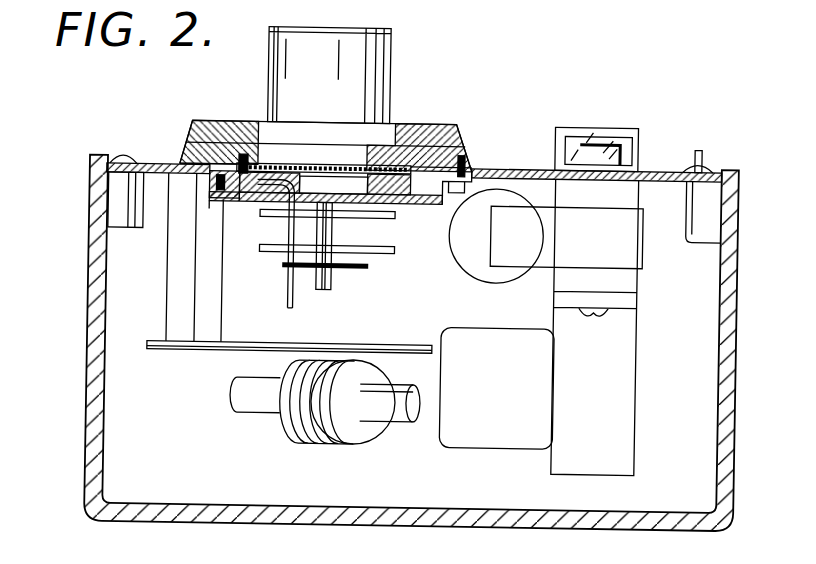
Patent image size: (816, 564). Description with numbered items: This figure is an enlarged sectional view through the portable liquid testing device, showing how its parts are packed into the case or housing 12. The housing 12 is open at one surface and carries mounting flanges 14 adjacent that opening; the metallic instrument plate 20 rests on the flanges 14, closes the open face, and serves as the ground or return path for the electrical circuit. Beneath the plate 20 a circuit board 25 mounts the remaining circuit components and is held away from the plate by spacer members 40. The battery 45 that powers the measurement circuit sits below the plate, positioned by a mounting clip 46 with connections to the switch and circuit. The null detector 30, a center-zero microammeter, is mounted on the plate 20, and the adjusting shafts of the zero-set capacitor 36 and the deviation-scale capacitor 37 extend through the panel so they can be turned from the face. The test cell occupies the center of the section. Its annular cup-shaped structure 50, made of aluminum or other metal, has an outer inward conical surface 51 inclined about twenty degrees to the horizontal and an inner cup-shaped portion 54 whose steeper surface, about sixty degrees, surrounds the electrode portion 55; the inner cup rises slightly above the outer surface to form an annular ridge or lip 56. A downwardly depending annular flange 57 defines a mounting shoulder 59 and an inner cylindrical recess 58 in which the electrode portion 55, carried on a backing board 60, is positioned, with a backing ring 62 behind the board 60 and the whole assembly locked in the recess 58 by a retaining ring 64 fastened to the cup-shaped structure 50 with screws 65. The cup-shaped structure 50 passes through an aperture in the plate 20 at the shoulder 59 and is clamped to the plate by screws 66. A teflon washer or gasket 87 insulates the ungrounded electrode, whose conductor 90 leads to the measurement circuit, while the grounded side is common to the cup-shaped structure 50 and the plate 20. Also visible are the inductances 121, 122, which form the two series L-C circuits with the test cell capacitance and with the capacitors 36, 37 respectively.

The case or housing 12 is at (92, 360).
The mounting flanges 14 is at (116, 205).
The instrument plate 20 is at (650, 176).
The circuit board 25 is at (236, 355).
The null detector 30 is at (576, 132).
The zero-set capacitor 36 is at (273, 287).
The deviation-scale capacitor 37 is at (385, 260).
The spacer members 40 is at (182, 285).
The battery 45 is at (498, 282).
The mounting clip 46 is at (630, 241).
The cup-shaped structure 50 is at (455, 140).
The inward conical surface 51 is at (432, 132).
The inner cup-shaped portion 54 is at (382, 160).
The electrode portion 55 is at (326, 165).
The annular ridge or lip 56 is at (376, 158).
The annular flange 57 is at (198, 224).
The inner cylindrical recess 58 is at (402, 192).
The mounting shoulder 59 is at (212, 180).
The backing board 60 is at (304, 167).
The backing ring 62 is at (208, 139).
The retaining ring 64 is at (252, 200).
The screws 65 is at (226, 203).
The screws 66 is at (496, 176).
The teflon washer or gasket 87 is at (268, 152).
The conductor 90 is at (326, 310).
The inductance 121 is at (352, 440).
The inductance 122 is at (405, 424).